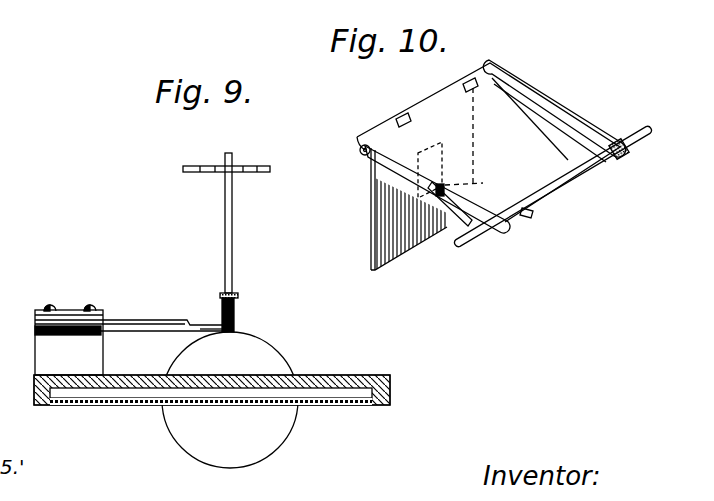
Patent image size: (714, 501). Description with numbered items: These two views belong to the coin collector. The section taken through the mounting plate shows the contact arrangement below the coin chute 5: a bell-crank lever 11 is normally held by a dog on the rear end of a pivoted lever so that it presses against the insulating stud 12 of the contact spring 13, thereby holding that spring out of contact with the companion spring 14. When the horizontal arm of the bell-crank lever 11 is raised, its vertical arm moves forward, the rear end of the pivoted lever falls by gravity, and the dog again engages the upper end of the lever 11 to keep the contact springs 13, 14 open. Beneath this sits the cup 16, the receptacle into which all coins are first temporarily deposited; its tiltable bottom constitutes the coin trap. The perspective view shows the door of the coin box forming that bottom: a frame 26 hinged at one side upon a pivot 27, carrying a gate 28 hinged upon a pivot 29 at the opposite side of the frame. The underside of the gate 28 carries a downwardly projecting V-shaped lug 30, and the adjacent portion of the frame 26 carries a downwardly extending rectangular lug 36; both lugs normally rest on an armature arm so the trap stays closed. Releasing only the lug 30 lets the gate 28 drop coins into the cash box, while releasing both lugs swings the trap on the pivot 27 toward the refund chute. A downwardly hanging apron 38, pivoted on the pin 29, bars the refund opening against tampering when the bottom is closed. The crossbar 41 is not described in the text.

In FIG. 9, the coin chute 5 is at (333, 405).
In FIG. 9, the bell-crank lever 11 is at (236, 290).
In FIG. 9, the insulating stud 12 is at (236, 302).
In FIG. 9, the contact spring 13 is at (149, 333).
In FIG. 9, the contact spring 14 is at (171, 320).
In FIG. 9, the cup 16 is at (230, 400).
In FIG. 9, the cross bar 41 is at (197, 172).
In FIG. 10, the frame 26 is at (567, 112).
In FIG. 10, the pivot 27 is at (587, 170).
In FIG. 10, the gate 28 is at (488, 142).
In FIG. 10, the pivot 29 is at (360, 149).
In FIG. 10, the V-shaped lug 30 is at (437, 205).
In FIG. 10, the rectangular lug 36 is at (395, 176).
In FIG. 10, the apron 38 is at (382, 254).